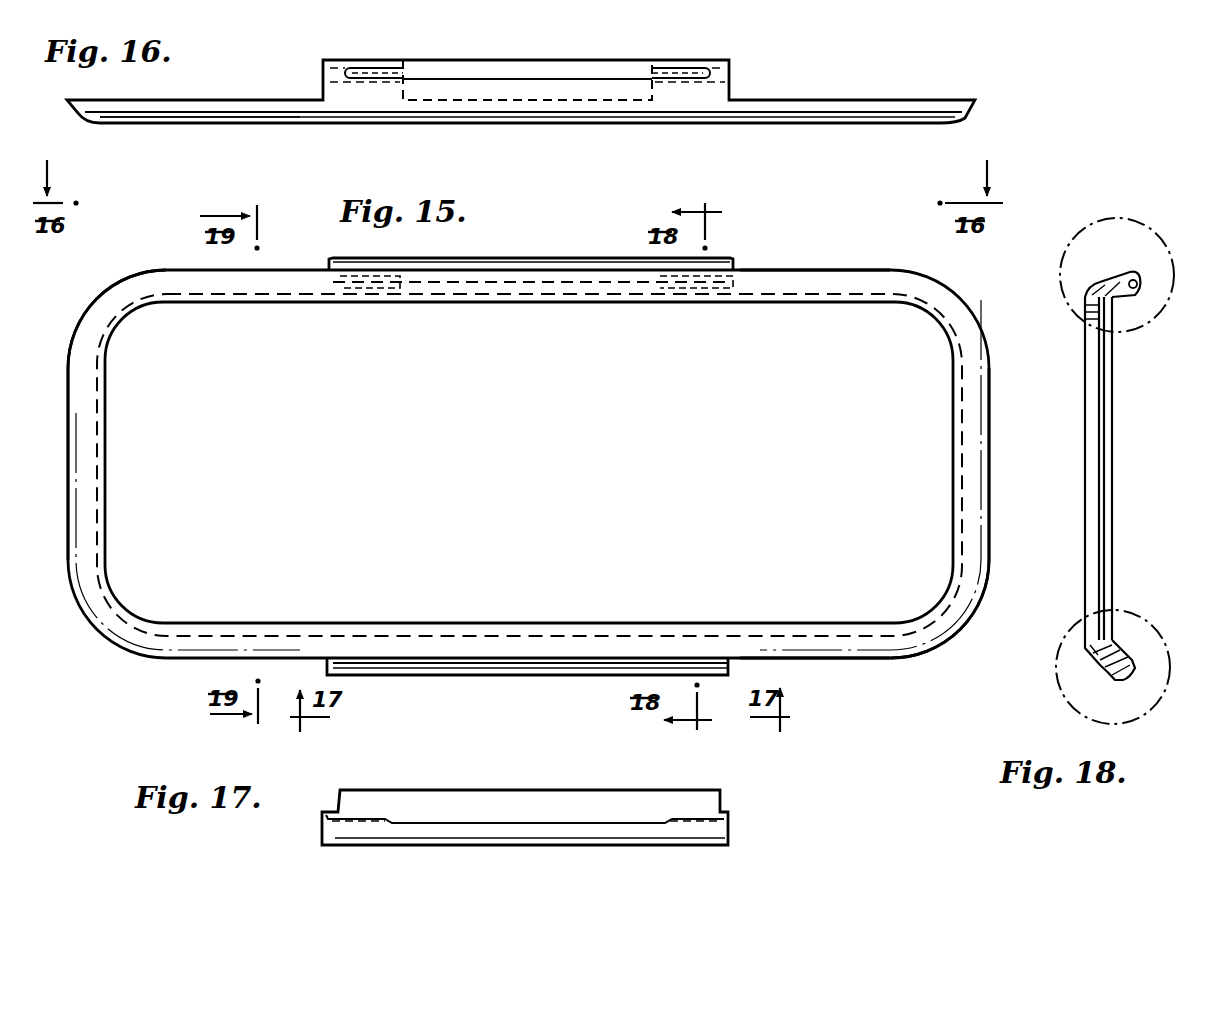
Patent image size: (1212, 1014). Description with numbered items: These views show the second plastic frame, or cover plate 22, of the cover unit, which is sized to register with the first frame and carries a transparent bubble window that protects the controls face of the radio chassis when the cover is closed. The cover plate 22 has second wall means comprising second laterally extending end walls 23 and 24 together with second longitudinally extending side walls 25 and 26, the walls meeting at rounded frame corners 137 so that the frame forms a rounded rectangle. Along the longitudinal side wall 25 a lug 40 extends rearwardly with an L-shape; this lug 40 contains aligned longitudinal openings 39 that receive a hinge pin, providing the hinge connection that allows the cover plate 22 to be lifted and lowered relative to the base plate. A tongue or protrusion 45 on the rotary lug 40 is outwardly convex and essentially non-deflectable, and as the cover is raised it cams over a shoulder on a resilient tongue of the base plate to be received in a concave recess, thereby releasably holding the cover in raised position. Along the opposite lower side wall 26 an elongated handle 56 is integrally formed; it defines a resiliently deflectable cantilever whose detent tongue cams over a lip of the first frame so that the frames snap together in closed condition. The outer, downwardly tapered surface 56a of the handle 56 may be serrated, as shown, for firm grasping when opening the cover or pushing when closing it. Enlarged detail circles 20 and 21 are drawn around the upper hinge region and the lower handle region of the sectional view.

In FIG. 16, the cover plate 22 is at (788, 70).
In FIG. 15, the cover plate 22 is at (780, 258).
In FIG. 15, the second laterally extending end wall 23 is at (67, 462).
In FIG. 15, the second laterally extending end wall 24 is at (991, 432).
In FIG. 16, the second longitudinally extending side wall 25 is at (308, 108).
In FIG. 15, the second longitudinally extending side wall 25 is at (850, 270).
In FIG. 18, the second longitudinally extending side wall 25 is at (1118, 292).
In FIG. 15, the second longitudinally extending side wall 26 is at (828, 648).
In FIG. 18, the second longitudinally extending side wall 26 is at (1068, 642).
In FIG. 15, the rounded frame corner 137 is at (95, 305).
In FIG. 15, the longitudinal opening 39 is at (364, 290).
In FIG. 16, the lug 40 is at (538, 62).
In FIG. 18, the lug 40 is at (1128, 300).
In FIG. 16, the protrusion 45 is at (634, 72).
In FIG. 15, the protrusion 45 is at (555, 258).
In FIG. 15, the handle 56 is at (425, 680).
In FIG. 17, the handle 56 is at (445, 840).
In FIG. 15, the downwardly tapered surface 56a is at (493, 662).
In FIG. 18, the detail circle of top end 20 is at (1117, 267).
In FIG. 18, the detail circle of bottom end 21 is at (1113, 676).